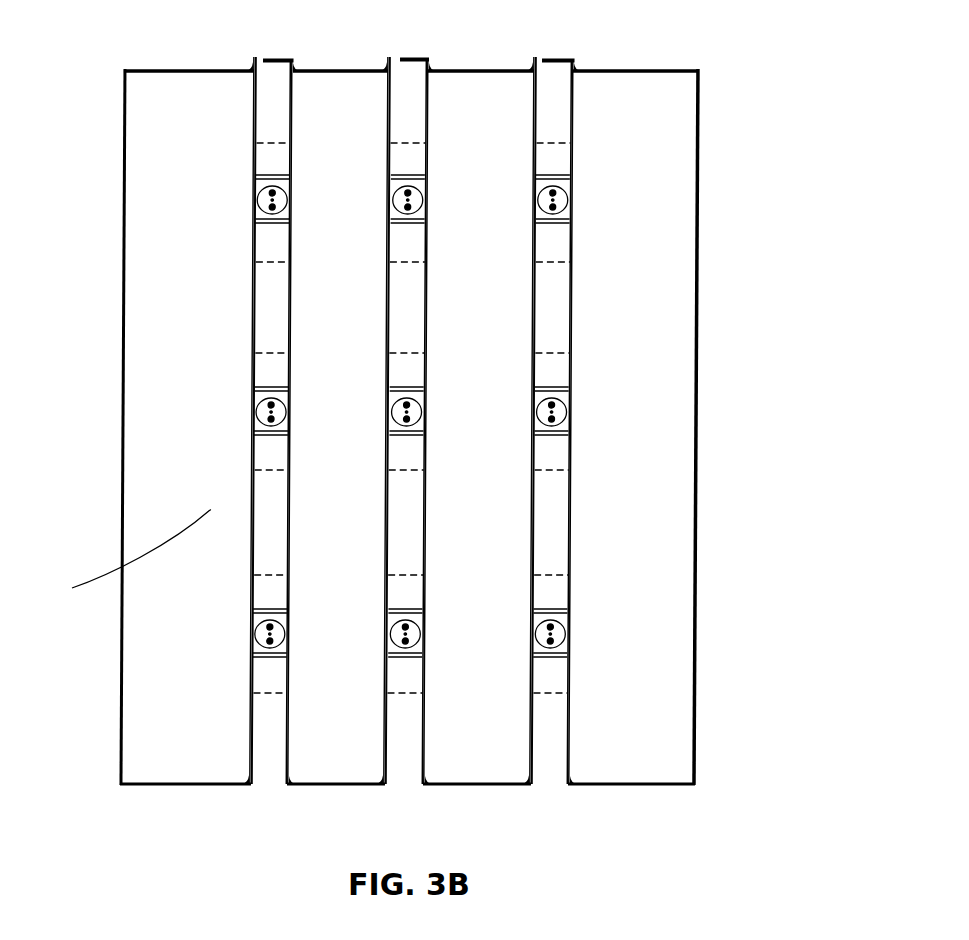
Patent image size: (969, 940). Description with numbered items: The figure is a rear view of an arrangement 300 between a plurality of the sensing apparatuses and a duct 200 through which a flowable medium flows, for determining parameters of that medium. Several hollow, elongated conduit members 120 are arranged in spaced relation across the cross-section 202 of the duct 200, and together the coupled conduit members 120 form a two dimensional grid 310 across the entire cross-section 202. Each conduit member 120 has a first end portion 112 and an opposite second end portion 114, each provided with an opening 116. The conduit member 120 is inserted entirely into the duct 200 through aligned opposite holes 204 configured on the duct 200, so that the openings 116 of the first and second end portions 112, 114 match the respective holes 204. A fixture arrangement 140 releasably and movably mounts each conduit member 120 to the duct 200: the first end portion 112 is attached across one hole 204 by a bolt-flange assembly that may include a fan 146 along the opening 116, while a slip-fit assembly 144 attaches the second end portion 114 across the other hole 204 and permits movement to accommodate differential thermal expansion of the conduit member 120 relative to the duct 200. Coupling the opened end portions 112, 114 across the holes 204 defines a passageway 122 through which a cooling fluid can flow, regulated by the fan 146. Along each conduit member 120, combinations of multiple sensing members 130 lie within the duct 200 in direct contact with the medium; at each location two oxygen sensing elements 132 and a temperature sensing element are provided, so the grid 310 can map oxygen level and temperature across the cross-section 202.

The arrangement 300 is at (92, 692).
The grid 310 is at (132, 340).
The duct 200 is at (703, 110).
The cross-section 202 is at (683, 212).
The fixture arrangement 140 is at (316, 56).
The slip-fit assembly 144 is at (577, 778).
The second end portion 114 is at (247, 757).
The opening 116 is at (355, 448).
The holes 204 is at (258, 54).
The fan 146 is at (318, 34).
The first end portion 112 is at (297, 107).
The conduit member 120 is at (247, 343).
The oxygen sensing element 132 is at (556, 265).
The passageway 122 is at (268, 753).
The sensing members 130 is at (247, 200).